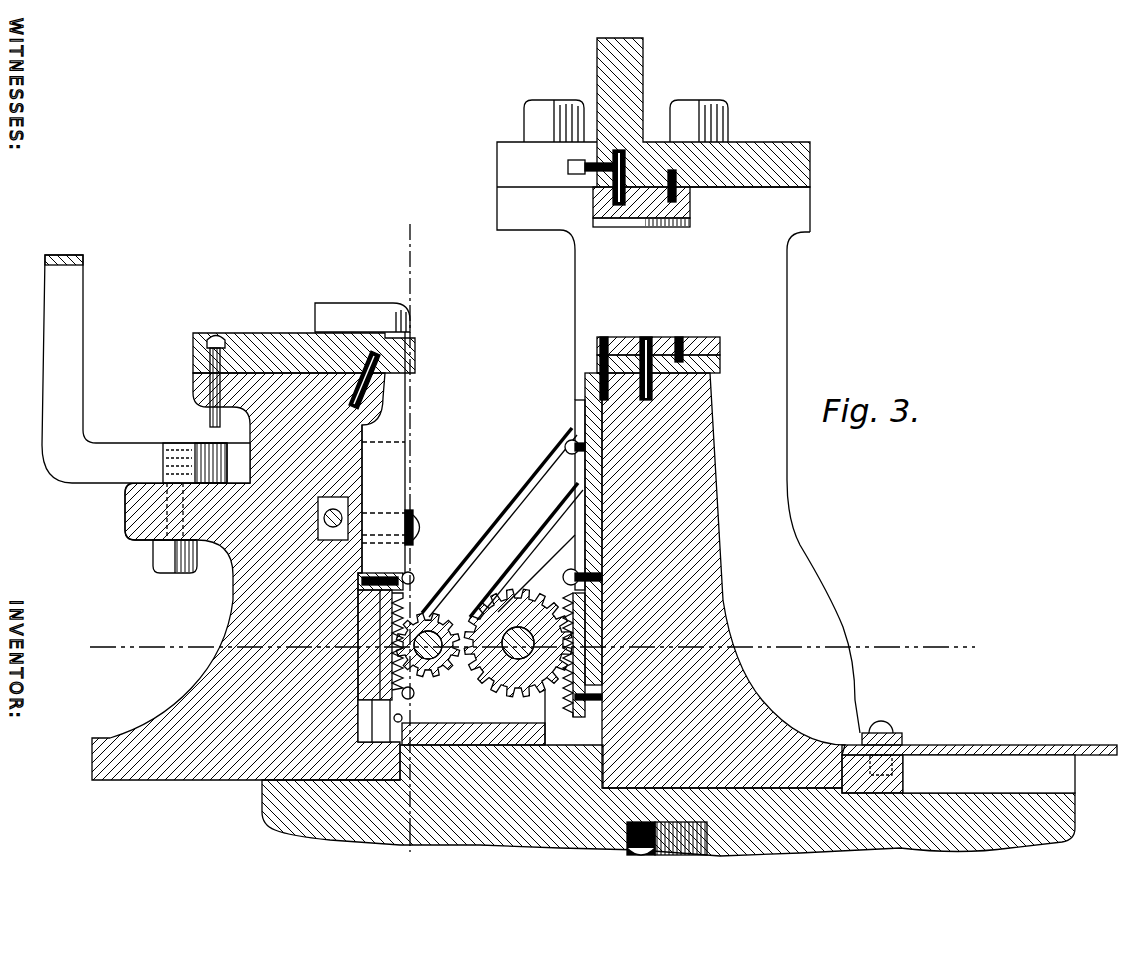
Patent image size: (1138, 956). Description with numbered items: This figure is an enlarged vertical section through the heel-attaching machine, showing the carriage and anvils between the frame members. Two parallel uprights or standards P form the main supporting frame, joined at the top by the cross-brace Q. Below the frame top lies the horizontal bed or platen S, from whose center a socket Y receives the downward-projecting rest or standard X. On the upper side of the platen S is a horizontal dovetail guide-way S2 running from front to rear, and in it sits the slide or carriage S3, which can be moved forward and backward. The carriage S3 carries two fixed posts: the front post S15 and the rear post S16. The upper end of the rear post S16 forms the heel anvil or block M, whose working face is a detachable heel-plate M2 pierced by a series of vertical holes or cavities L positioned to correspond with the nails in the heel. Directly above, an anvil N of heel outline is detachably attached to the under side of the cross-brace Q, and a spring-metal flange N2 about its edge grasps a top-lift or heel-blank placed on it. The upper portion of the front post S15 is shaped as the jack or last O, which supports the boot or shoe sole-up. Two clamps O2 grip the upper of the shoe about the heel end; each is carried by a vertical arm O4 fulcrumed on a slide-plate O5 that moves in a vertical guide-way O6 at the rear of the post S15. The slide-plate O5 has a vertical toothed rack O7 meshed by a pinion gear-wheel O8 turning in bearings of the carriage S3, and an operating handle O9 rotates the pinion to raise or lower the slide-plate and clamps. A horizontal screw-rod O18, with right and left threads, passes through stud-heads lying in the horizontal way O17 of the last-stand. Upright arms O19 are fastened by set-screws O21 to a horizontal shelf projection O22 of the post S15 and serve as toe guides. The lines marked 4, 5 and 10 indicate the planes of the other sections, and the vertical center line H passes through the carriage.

The upright arm O19 is at (146, 369).
The jack or last O is at (258, 333).
The clamp O2 is at (362, 317).
The set-screw O21 is at (190, 443).
The horizontal shelf projection O22 is at (133, 515).
The front post S15 is at (246, 576).
The vertical arm O4 is at (383, 452).
The horizontal screw-rod O18 is at (355, 519).
The section line 5— 5 is at (422, 520).
The horizontal way O17 is at (333, 518).
The operating handle O9 is at (502, 524).
The vertical toothed rack O7 is at (412, 582).
The pinion gear-wheel O8 is at (483, 642).
The vertical guide-way O6 is at (398, 718).
The slide-plate O5 is at (374, 721).
The slide or carriage S3 is at (910, 776).
The horizontal dovetail guide-way S2 is at (252, 798).
The horizontal bed or platen S is at (668, 800).
The section line 10— 10 is at (532, 642).
The section line 4— 4 is at (409, 517).
The center line H is at (403, 848).
The rest or standard X is at (647, 845).
The socket Y is at (707, 852).
The upper cross-brace Q is at (810, 166).
The block or anvil N is at (593, 207).
The flange N2 is at (690, 223).
The anvil or block M is at (597, 362).
The heel-plate M2 is at (600, 341).
The vertical holes or cavities L is at (680, 346).
The upright or standard P is at (710, 460).
The rear post S16 is at (723, 552).